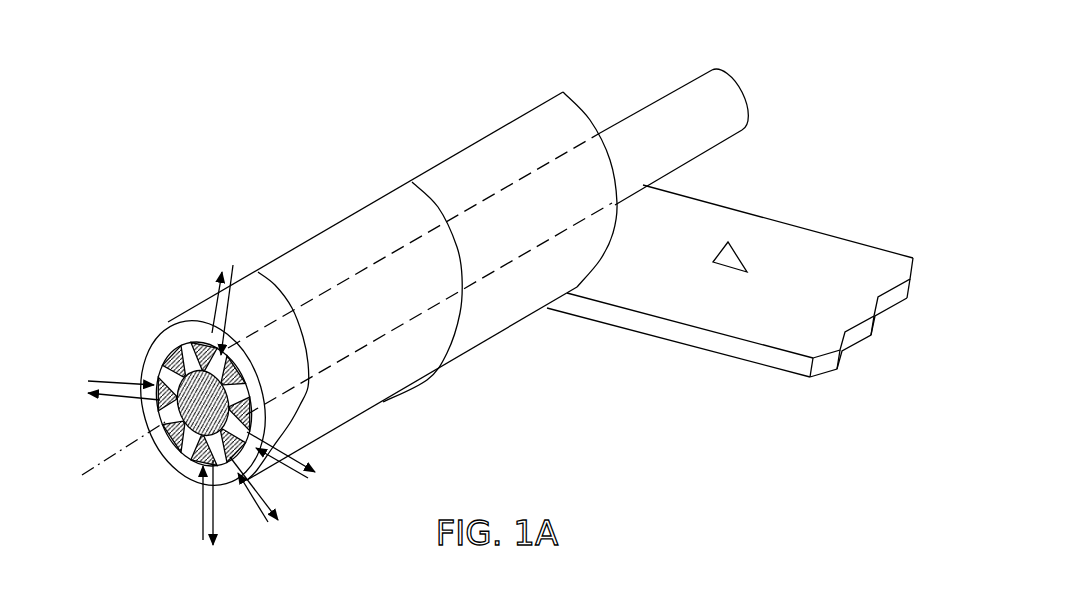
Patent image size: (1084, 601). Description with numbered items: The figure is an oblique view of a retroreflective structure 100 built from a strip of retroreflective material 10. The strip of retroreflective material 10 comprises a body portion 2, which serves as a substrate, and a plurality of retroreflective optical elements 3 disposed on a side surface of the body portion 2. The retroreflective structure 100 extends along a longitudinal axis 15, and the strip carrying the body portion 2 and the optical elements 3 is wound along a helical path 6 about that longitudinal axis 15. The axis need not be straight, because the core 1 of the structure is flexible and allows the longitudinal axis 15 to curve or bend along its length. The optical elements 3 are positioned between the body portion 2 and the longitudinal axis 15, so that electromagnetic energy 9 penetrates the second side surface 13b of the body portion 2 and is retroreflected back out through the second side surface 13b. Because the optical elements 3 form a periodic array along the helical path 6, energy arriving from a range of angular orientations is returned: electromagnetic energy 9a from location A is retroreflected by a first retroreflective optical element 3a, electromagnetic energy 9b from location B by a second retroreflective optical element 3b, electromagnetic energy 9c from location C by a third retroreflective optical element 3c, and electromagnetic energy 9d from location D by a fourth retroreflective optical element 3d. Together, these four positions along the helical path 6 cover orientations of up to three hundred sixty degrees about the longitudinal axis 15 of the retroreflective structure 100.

The retroreflective structure 100 is at (318, 84).
The helical path 6 is at (340, 223).
The second side surface 13b is at (505, 328).
The strip of retroreflective material 10 is at (778, 224).
The body portion 2 is at (162, 338).
The core 1 is at (200, 410).
The retroreflective optical elements 3 is at (233, 486).
The first retroreflective optical element 3a is at (226, 362).
The second retroreflective optical element 3b is at (157, 376).
The third retroreflective optical element 3c is at (198, 454).
The fourth retroreflective optical element 3d is at (255, 430).
The longitudinal axis 15 is at (101, 467).
The electromagnetic energy 9 is at (264, 492).
The electromagnetic energy 9a is at (209, 298).
The electromagnetic energy 9b is at (108, 401).
The electromagnetic energy 9c is at (215, 528).
The electromagnetic energy 9d is at (300, 450).